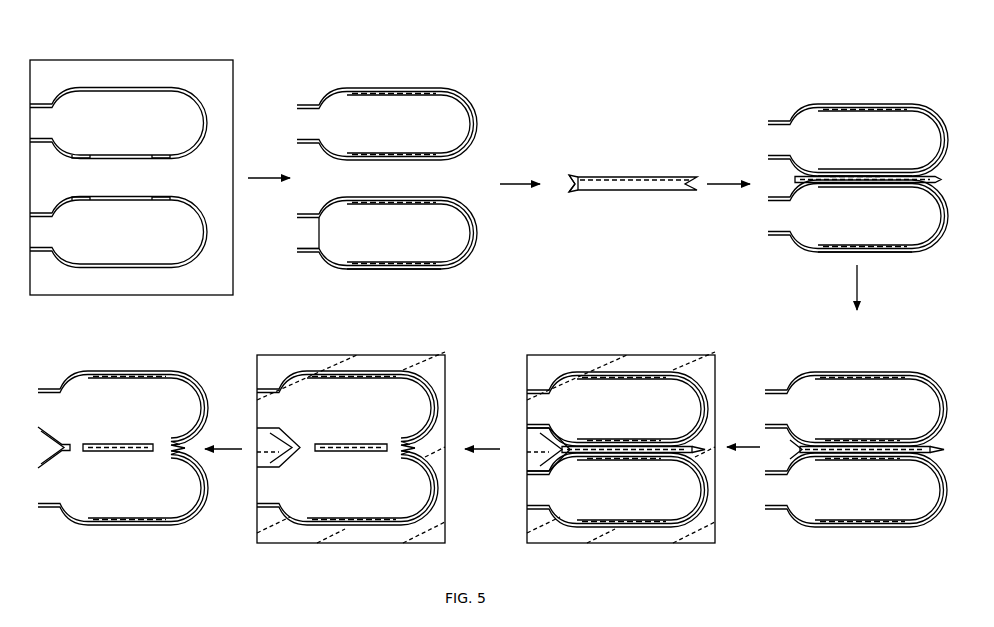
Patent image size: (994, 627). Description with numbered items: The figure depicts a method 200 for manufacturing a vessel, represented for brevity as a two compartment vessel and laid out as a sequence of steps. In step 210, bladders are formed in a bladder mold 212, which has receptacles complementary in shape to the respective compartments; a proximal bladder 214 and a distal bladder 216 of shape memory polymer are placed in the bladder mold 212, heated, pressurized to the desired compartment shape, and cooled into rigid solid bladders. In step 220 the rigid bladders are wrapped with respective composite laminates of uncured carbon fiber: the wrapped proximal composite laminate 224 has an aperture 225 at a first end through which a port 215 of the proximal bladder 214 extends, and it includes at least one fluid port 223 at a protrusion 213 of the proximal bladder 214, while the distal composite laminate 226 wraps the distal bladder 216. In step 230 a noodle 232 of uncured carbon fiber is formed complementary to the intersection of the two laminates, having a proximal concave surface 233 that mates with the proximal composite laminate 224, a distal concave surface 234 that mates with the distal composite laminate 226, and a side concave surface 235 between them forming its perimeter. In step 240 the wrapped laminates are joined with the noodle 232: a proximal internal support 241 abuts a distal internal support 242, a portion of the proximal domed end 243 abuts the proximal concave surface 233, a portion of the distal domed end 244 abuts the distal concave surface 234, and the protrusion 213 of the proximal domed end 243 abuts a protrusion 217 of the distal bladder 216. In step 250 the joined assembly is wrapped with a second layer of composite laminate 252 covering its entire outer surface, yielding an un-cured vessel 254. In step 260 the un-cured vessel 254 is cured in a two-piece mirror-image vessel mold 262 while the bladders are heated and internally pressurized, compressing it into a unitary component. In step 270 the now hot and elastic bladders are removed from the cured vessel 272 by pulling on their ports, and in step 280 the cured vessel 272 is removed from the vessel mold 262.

The method for manufacturing a vessel 200 is at (652, 70).
The step of forming bladders in a bladder mold 210 is at (185, 43).
The bladder mold 212 is at (207, 70).
The protrusion of proximal bladder 213 is at (352, 200).
The proximal bladder 214 is at (173, 268).
The port 215 is at (308, 253).
The distal bladder 216 is at (128, 87).
The protrusion of distal bladder 217 is at (820, 173).
The step of wrapping the bladders with composite laminates 220 is at (425, 50).
The fluid port 223 is at (355, 189).
The proximal composite laminate 224 is at (408, 273).
The aperture 225 is at (327, 241).
The distal composite laminate 226 is at (387, 88).
The step of forming a noodle 230 is at (622, 130).
The noodle 232 is at (612, 185).
The proximal concave surface 233 is at (578, 192).
The distal concave surface 234 is at (575, 180).
The side concave surface 235 is at (570, 185).
The step of joining the wrapped composite laminates and noodle 240 is at (842, 68).
The proximal internal support 241 is at (867, 181).
The distal internal support 242 is at (862, 173).
The proximal domed end 243 is at (797, 180).
The distal domed end 244 is at (790, 165).
The step of wrapping with a second layer of composite laminate 250 is at (840, 352).
The second layer of composite laminate 252 is at (810, 372).
The un-cured vessel 254 is at (885, 533).
The step of curing the un-cured vessel in a vessel mold 260 is at (617, 322).
The vessel mold 262 is at (553, 363).
The step of removing the bladders 270 is at (422, 343).
The cured vessel 272 is at (375, 527).
The step of removing the cured vessel from the vessel mold 280 is at (167, 362).